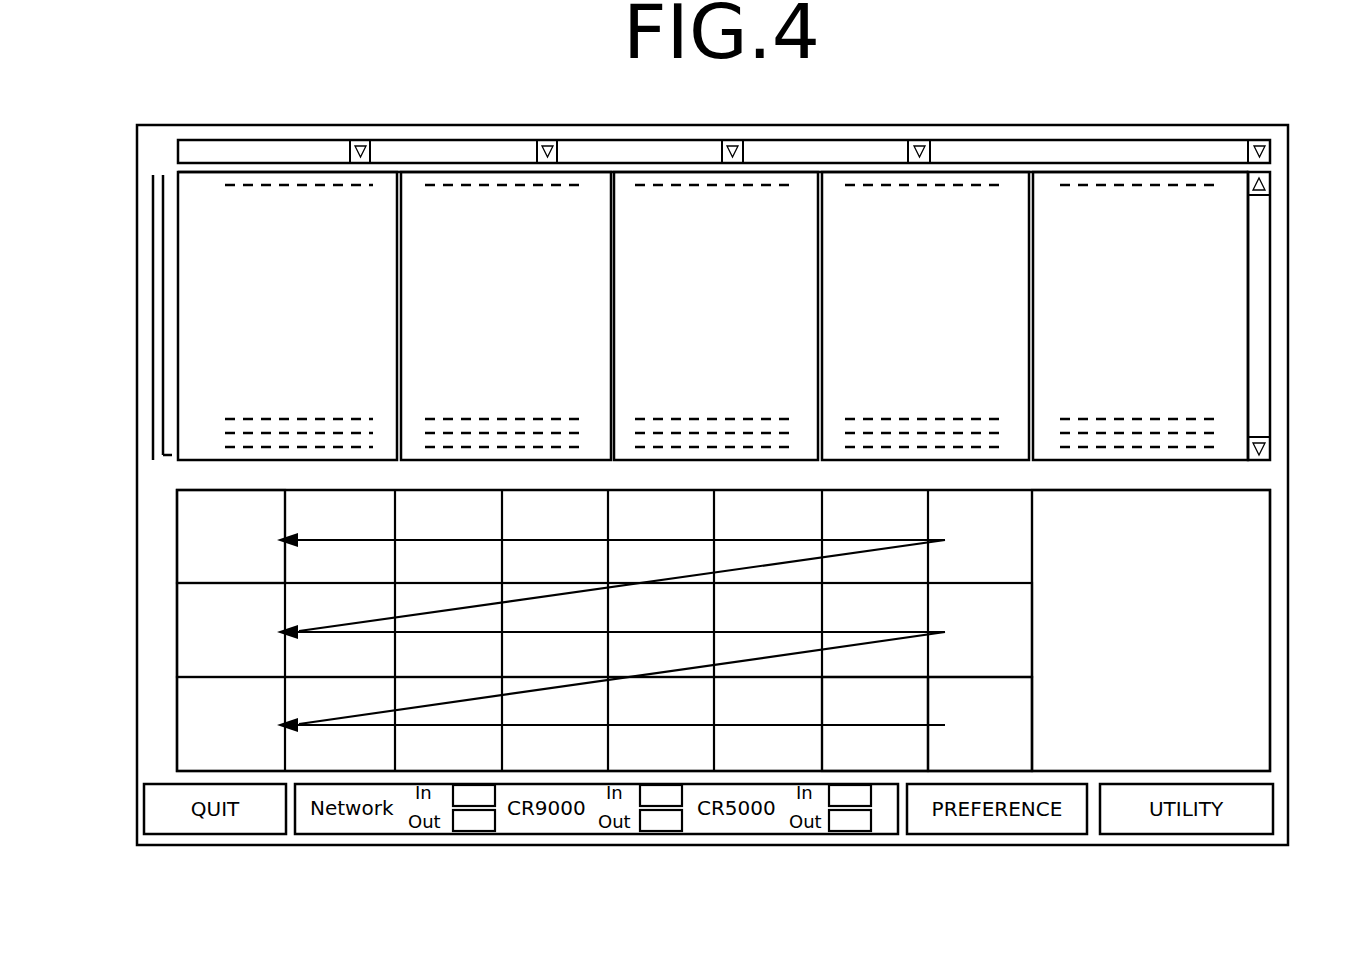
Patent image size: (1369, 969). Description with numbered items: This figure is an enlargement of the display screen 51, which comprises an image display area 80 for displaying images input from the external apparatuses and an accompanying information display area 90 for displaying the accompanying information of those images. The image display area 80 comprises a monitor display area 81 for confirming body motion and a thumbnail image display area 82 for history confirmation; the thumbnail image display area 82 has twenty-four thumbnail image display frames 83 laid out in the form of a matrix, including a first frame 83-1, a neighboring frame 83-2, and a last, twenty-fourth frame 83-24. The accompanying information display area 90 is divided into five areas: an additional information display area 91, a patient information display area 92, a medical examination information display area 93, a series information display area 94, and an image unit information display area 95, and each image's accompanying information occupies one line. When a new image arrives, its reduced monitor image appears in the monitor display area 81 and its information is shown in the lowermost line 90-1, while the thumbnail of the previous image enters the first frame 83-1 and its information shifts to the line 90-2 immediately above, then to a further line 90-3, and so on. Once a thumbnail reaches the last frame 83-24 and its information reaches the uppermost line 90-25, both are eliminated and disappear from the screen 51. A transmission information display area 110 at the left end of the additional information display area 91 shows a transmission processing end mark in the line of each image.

The screen 51 is at (1294, 174).
The accompanying information display area 90 is at (1277, 290).
The uppermost line 90-25 is at (225, 185).
The third information row 90-3 is at (225, 419).
The line immediately above the lowermost line 90-2 is at (225, 433).
The lowermost line 90-1 is at (225, 447).
The transmission information display area 110 is at (163, 282).
The additional information display area 91 is at (273, 347).
The patient information display area 92 is at (488, 347).
The medical examination information display area 93 is at (699, 347).
The series information display area 94 is at (911, 347).
The image unit information display area 95 is at (1122, 347).
The image display area 80 is at (1280, 584).
The monitor display area 81 is at (1250, 665).
The thumbnail image display area 82 is at (173, 657).
The thumbnail image display frames 83 is at (188, 713).
The 24th frame 83-24 is at (185, 532).
The image cell 2 83-2 is at (830, 745).
The first frame 83-1 is at (945, 745).